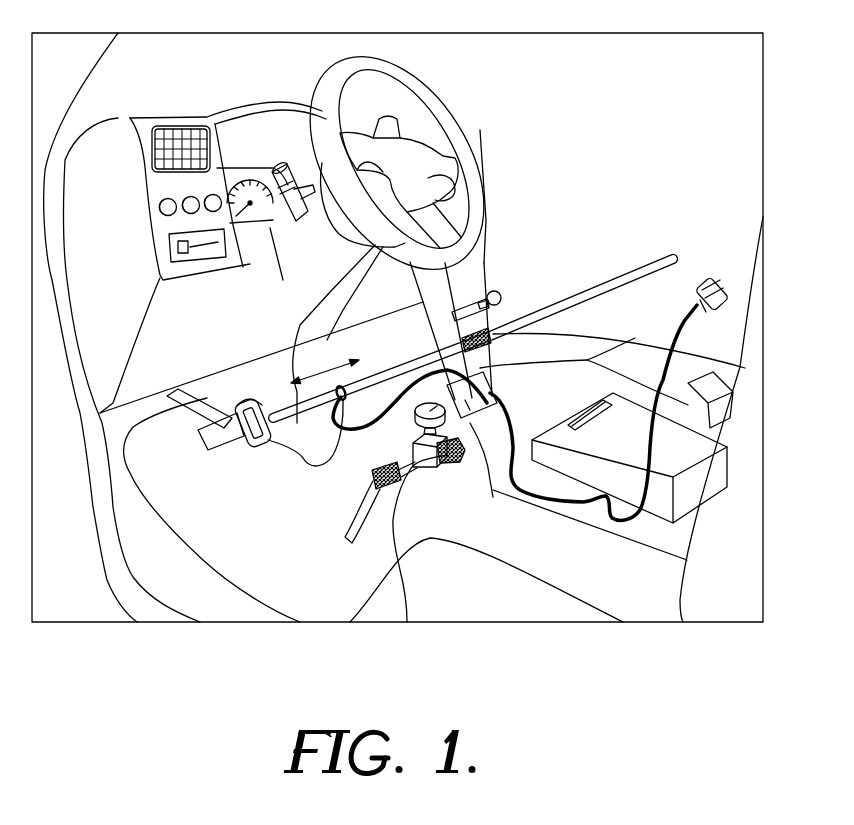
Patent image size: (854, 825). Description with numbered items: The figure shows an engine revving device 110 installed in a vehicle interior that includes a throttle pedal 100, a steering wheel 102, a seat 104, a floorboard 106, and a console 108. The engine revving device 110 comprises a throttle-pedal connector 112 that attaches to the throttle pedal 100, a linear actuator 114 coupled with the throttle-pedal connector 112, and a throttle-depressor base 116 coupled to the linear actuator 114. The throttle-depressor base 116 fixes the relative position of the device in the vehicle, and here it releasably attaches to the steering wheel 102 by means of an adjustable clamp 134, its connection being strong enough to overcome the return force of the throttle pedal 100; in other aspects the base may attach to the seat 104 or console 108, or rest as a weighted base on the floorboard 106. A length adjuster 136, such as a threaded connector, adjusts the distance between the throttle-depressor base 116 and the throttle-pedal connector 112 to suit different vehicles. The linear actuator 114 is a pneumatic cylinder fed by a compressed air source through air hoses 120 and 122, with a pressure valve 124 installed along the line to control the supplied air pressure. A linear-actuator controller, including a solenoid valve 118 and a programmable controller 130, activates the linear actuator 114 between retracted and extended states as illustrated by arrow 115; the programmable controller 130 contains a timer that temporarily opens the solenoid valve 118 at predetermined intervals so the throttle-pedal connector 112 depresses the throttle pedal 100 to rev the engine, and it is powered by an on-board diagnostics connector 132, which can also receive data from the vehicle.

The throttle pedal 100 is at (258, 450).
The steering wheel 102 is at (390, 88).
The seat 104 is at (433, 600).
The floorboard 106 is at (323, 608).
The console 108 is at (157, 336).
The engine revving device 110 is at (381, 358).
The throttle-pedal connector 112 is at (260, 403).
The linear actuator 114 is at (300, 462).
The arrow 115 is at (326, 377).
The throttle-depressor base 116 is at (493, 362).
The solenoid valve 118 is at (493, 490).
The air hose 120 is at (260, 448).
The air hose 122 is at (357, 540).
The pressure valve 124 is at (440, 467).
The programmable controller 130 is at (638, 412).
The on-board diagnostics connector 132 is at (700, 292).
The adjustable clamp 134 is at (455, 250).
The length adjuster 136 is at (506, 311).